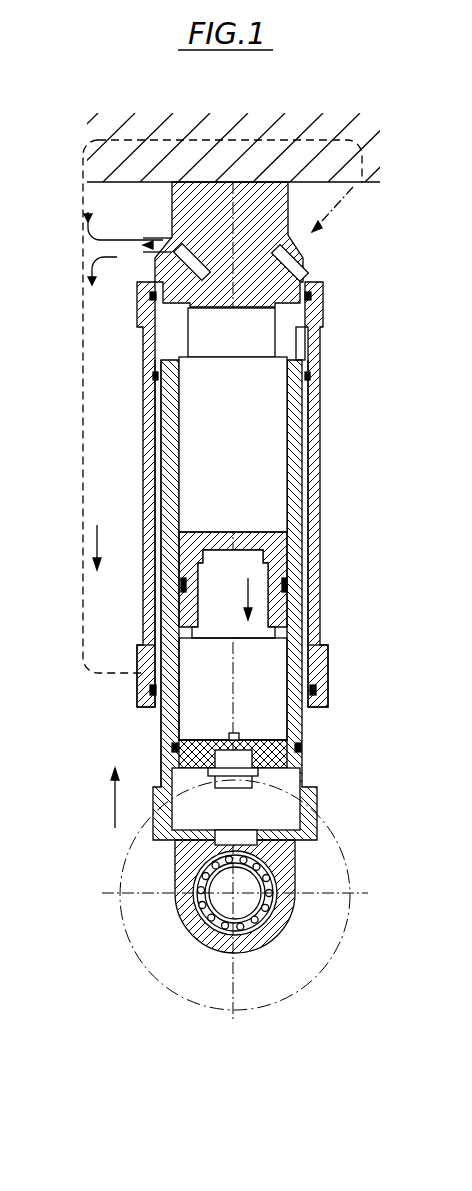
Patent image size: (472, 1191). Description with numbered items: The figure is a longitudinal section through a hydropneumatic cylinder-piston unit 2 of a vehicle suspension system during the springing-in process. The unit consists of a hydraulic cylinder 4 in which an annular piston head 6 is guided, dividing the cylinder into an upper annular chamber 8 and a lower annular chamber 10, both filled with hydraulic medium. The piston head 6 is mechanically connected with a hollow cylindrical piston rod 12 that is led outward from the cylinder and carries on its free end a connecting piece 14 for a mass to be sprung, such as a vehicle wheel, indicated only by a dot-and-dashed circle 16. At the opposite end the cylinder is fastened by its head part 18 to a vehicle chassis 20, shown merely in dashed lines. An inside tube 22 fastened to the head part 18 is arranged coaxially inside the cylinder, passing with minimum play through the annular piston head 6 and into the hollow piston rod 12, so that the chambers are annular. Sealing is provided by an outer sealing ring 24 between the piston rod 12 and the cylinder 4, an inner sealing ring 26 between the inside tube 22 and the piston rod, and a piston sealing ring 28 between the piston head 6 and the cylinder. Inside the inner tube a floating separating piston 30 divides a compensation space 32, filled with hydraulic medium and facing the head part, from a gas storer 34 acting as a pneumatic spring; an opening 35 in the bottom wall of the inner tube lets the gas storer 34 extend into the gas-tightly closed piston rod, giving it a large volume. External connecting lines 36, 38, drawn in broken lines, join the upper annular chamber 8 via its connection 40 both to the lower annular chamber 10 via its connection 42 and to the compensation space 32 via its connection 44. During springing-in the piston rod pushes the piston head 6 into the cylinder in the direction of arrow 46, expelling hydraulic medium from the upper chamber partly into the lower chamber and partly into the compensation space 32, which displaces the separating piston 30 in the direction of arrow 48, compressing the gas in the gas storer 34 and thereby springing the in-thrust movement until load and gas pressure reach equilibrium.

The cylinder-piston unit 2 is at (330, 328).
The hydraulic cylinder 4 is at (317, 415).
The piston head 6 is at (161, 397).
The upper annular chamber 8 is at (303, 338).
The lower annular chamber 10 is at (312, 540).
The piston rod 12 is at (305, 732).
The connecting piece 14 is at (288, 912).
The dot-and-dashed circle 16 is at (322, 968).
The head part 18 is at (172, 205).
The vehicle chassis 20 is at (113, 147).
The inside tube 22 is at (296, 492).
The outer sealing ring 24 is at (310, 690).
The inner sealing ring 26 is at (302, 755).
The piston sealing ring 28 is at (305, 377).
The separating piston 30 is at (283, 604).
The compensation space 32 is at (265, 453).
The gas storer 34 is at (268, 658).
The opening 35 is at (172, 744).
The external connecting line 36 is at (83, 477).
The external connecting line 38 is at (325, 223).
The connection 40 is at (83, 252).
The connection 42 is at (140, 680).
The connection 44 is at (295, 275).
The arrow 46 is at (115, 815).
The arrow 48 is at (197, 596).